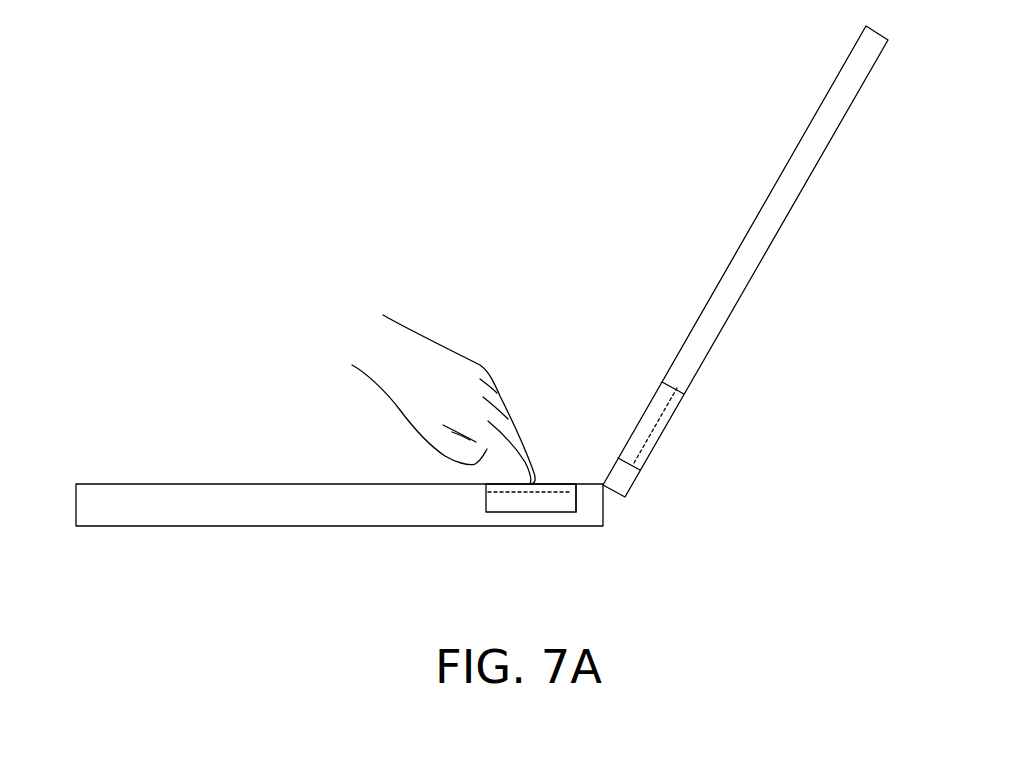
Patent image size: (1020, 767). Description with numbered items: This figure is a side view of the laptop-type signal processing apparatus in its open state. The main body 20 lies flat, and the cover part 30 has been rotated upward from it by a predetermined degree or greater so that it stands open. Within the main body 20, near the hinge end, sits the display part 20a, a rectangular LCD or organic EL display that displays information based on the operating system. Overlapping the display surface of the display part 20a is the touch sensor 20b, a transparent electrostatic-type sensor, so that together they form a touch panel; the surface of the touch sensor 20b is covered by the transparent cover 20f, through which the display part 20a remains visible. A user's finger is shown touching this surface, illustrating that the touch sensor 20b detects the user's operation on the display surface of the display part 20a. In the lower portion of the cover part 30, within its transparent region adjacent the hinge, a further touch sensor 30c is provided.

The main body 20 is at (217, 540).
The display part 20a is at (513, 503).
The touch sensor 20b is at (555, 495).
The transparent cover 20f is at (557, 490).
The cover part 30 is at (800, 237).
The touch sensor 30c is at (670, 420).